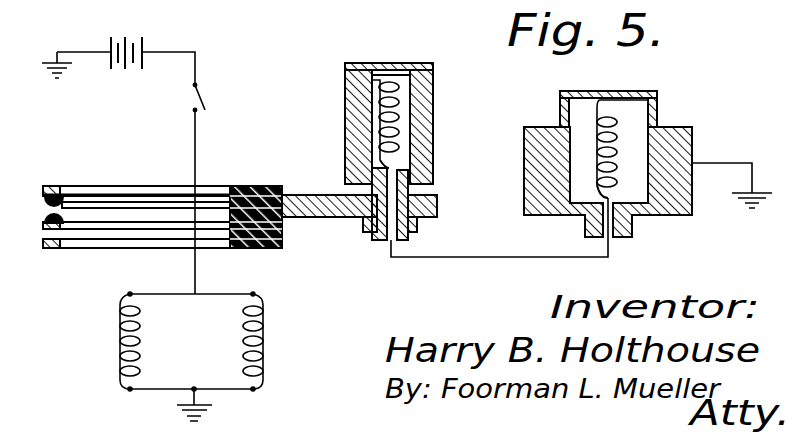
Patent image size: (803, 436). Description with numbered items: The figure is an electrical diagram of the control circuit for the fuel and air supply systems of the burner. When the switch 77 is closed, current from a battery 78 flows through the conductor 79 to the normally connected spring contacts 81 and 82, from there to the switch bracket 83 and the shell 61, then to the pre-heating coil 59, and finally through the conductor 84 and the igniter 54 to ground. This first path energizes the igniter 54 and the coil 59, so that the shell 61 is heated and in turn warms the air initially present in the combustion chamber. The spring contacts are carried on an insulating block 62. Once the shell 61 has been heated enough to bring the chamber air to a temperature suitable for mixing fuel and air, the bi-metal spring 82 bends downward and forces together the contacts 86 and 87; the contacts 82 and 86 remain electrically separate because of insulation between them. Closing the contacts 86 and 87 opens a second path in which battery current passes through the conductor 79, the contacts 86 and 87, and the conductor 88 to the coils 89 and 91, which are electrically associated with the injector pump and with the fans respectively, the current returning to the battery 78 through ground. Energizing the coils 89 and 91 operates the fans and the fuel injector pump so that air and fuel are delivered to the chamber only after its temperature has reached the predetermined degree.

The igniter 54 is at (657, 92).
The coil 59 is at (389, 80).
The shell 61 is at (443, 94).
The insulating block 62 is at (283, 182).
The switch 77 is at (197, 85).
The battery 78 is at (143, 48).
The conductor 79 is at (197, 133).
The spring contact 81 is at (100, 186).
The bi-metal spring 82 is at (136, 202).
The switch bracket 83 is at (437, 215).
The conductor 84 is at (485, 258).
The contact 86 is at (100, 229).
The contact 87 is at (142, 248).
The conductor 88 is at (197, 270).
The coil 89 is at (120, 345).
The coil 91 is at (265, 336).